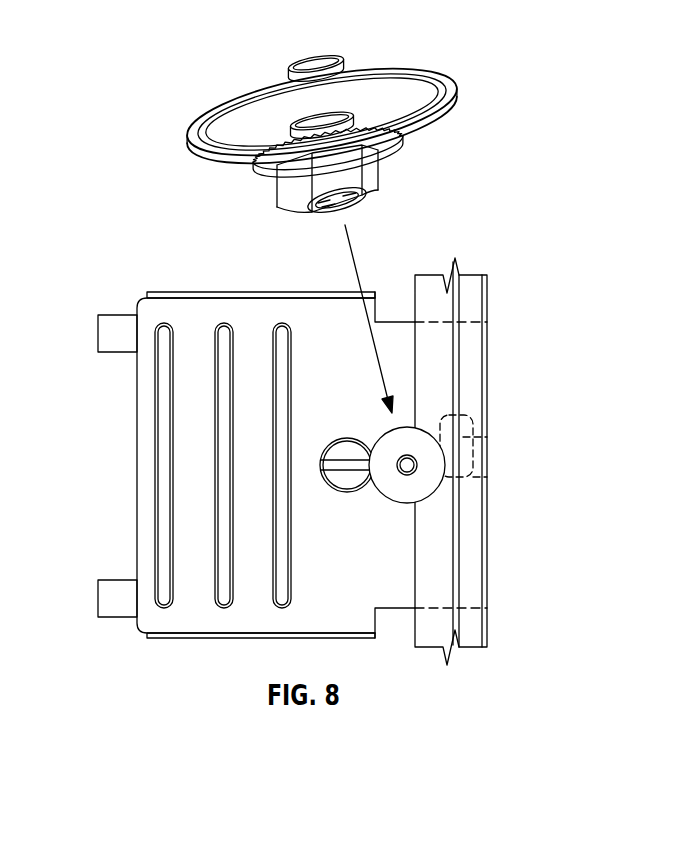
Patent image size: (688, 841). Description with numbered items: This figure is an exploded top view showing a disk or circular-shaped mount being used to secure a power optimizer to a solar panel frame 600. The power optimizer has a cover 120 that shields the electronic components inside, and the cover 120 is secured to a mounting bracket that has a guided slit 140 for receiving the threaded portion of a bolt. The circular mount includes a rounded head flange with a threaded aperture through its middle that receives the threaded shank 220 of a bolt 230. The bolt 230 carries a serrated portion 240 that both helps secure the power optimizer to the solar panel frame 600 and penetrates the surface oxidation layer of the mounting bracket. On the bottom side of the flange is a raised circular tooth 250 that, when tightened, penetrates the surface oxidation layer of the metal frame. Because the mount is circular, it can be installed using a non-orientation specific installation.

The cover 120 is at (136, 467).
The guided slit 140 is at (470, 415).
The threaded shank 220 is at (303, 63).
The bolt 230 is at (383, 172).
The serrated portion 240 is at (400, 128).
The circular tooth 250 is at (231, 143).
The mounting bracket 600 is at (488, 305).